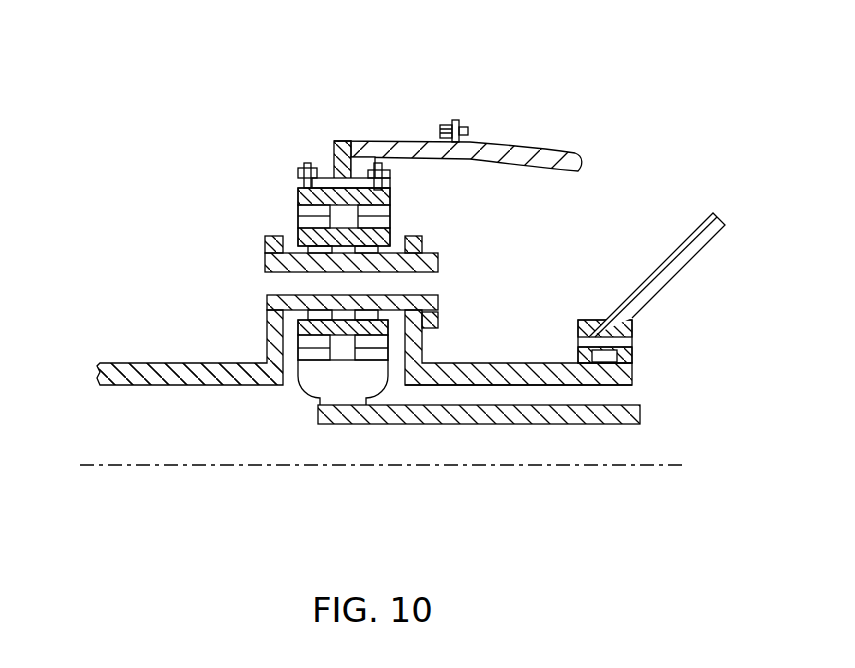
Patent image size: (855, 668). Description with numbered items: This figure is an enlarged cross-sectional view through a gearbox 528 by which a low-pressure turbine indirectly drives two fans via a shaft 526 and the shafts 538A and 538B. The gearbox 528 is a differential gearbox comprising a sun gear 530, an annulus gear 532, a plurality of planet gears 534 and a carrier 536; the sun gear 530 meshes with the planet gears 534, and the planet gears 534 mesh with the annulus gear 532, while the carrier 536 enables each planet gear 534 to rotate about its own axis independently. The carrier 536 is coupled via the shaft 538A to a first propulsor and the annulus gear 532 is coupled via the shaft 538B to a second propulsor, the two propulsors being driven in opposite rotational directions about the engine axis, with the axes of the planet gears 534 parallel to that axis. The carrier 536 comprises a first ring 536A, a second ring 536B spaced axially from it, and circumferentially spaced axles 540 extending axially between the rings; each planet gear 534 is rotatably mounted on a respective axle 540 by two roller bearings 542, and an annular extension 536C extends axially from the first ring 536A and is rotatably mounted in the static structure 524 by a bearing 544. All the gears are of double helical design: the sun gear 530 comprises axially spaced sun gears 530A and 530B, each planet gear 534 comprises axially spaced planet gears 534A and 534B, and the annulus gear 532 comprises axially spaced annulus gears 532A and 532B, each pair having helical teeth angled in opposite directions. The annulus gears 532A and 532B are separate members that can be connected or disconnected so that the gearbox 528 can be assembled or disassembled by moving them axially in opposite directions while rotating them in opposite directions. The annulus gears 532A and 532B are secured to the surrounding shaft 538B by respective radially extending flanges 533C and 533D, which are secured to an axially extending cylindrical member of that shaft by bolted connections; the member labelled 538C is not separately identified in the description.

The static structure 524 is at (685, 260).
The shaft 526 is at (515, 420).
The gearbox 528 is at (222, 428).
The sun gear 530 is at (344, 384).
The sun gear 530A is at (312, 357).
The sun gear 530B is at (373, 357).
The annulus gear 532 is at (356, 178).
The annulus gear 532A is at (310, 200).
The annulus gear 532B is at (380, 184).
The radially extending member 533C is at (298, 180).
The radially extending member 533D is at (393, 187).
The planet gear 534 is at (345, 238).
The planet gear 534A is at (303, 225).
The planet gear 534B is at (392, 227).
The carrier 536 is at (343, 407).
The first ring 536A is at (422, 352).
The second ring 536B is at (267, 357).
The annular extension 536C is at (550, 386).
The shaft 538A is at (133, 380).
The shaft 538B is at (557, 157).
The bracket 538C is at (332, 178).
The axle 540 is at (270, 262).
The bearing 542 is at (298, 304).
The bearing 544 is at (632, 353).